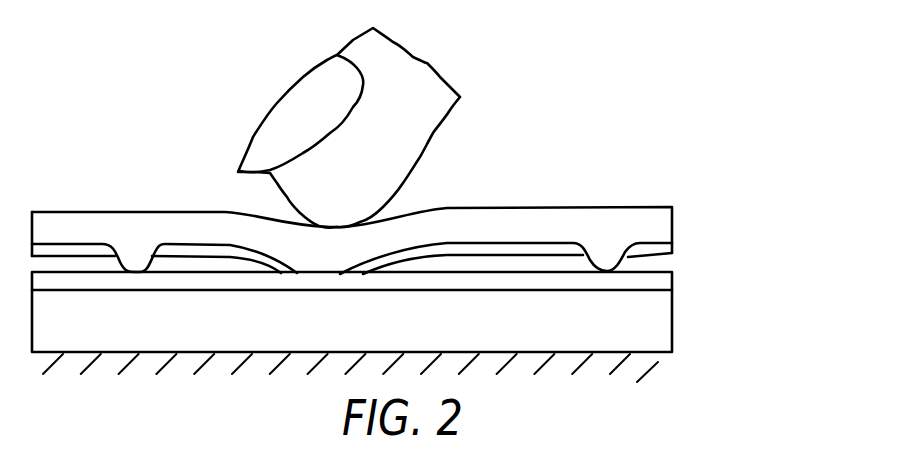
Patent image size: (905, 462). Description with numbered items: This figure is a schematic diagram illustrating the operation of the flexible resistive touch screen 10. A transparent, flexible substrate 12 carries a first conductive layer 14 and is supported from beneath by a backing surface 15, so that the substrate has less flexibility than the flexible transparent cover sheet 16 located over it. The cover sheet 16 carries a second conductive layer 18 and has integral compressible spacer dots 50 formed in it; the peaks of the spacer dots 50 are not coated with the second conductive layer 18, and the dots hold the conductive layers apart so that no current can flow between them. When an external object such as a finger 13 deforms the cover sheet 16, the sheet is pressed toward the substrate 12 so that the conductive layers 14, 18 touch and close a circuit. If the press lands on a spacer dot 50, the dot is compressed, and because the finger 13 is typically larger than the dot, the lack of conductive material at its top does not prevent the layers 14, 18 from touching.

The touch sensor assembly 10 is at (717, 152).
The transparent flexible substrate 12 is at (675, 320).
The finger 13 is at (430, 133).
The first conductive layer 14 is at (675, 282).
The backing surface 15 is at (655, 365).
The flexible transparent cover sheet 16 is at (667, 222).
The second conductive layer 18 is at (672, 250).
The integral compressible spacer dots 50 is at (627, 258).